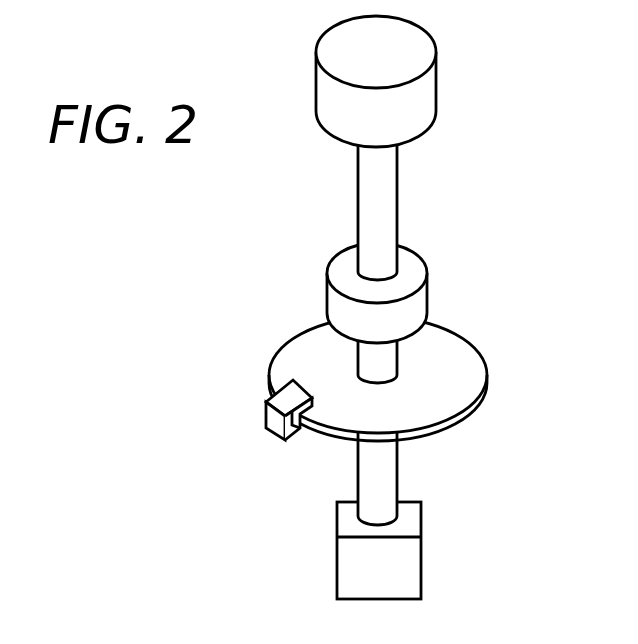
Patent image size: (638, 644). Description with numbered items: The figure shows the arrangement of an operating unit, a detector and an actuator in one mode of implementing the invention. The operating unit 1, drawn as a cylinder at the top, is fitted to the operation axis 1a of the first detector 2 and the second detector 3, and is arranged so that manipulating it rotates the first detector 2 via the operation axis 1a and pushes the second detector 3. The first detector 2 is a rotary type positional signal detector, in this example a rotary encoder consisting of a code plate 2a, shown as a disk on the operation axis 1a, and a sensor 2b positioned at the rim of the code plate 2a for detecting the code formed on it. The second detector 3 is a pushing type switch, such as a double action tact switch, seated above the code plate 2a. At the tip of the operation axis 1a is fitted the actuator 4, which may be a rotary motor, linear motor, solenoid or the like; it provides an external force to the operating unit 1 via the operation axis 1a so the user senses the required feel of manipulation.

The operating unit 1 is at (437, 92).
The operation axis 1a is at (398, 200).
The first detector 2 is at (353, 388).
The code plate 2a is at (262, 357).
The sensor 2b is at (273, 442).
The second detector 3 is at (428, 292).
The actuator 4 is at (422, 558).